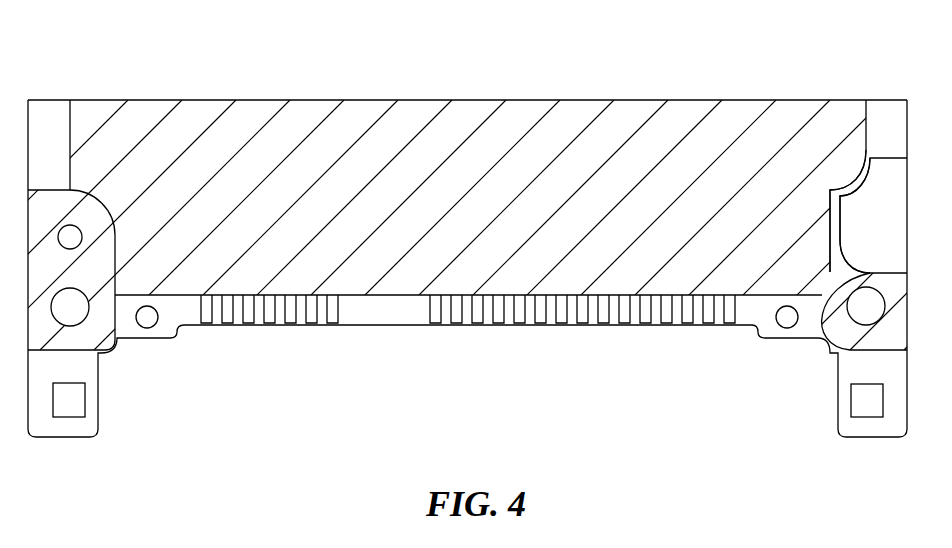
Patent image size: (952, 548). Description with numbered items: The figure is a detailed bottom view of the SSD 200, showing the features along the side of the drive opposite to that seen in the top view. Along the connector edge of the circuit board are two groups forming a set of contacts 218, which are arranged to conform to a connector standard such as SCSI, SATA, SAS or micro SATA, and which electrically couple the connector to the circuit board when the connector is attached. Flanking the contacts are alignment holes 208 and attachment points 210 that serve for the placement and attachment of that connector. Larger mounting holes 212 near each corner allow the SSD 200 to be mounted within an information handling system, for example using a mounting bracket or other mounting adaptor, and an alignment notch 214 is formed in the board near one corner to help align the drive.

The SSD 200 is at (256, 70).
The alignment holes 208 is at (147, 317).
The attachment points 210 is at (70, 398).
The mounting holes 212 is at (70, 307).
The alignment notch 214 is at (858, 197).
The set of contacts 218 is at (201, 339).